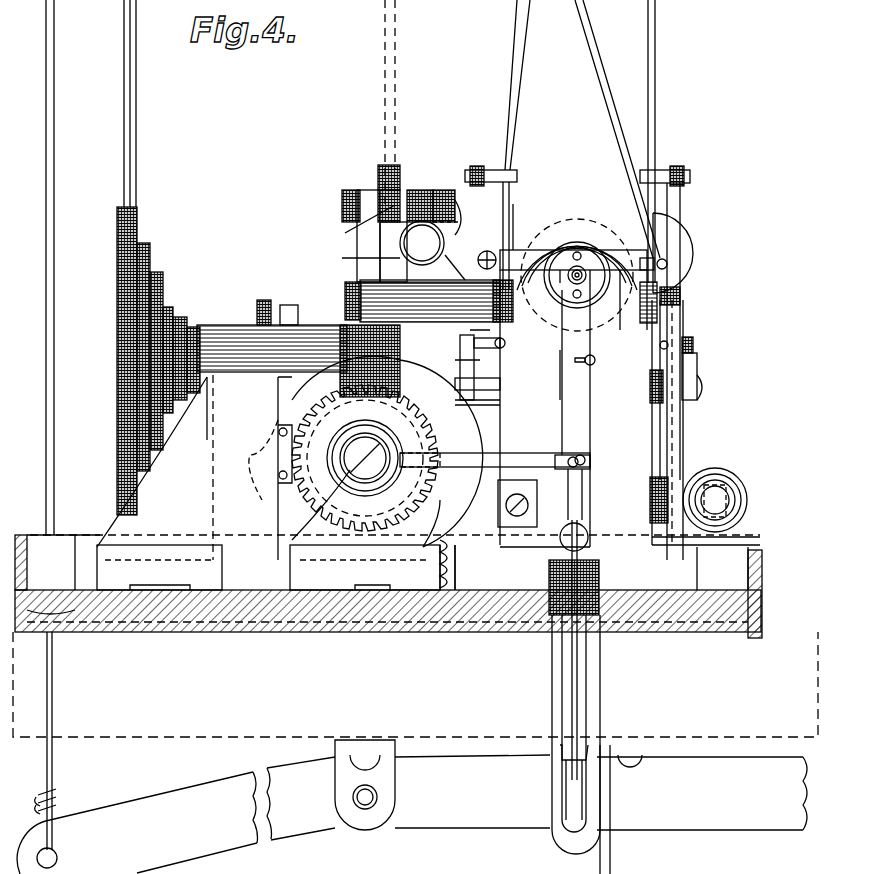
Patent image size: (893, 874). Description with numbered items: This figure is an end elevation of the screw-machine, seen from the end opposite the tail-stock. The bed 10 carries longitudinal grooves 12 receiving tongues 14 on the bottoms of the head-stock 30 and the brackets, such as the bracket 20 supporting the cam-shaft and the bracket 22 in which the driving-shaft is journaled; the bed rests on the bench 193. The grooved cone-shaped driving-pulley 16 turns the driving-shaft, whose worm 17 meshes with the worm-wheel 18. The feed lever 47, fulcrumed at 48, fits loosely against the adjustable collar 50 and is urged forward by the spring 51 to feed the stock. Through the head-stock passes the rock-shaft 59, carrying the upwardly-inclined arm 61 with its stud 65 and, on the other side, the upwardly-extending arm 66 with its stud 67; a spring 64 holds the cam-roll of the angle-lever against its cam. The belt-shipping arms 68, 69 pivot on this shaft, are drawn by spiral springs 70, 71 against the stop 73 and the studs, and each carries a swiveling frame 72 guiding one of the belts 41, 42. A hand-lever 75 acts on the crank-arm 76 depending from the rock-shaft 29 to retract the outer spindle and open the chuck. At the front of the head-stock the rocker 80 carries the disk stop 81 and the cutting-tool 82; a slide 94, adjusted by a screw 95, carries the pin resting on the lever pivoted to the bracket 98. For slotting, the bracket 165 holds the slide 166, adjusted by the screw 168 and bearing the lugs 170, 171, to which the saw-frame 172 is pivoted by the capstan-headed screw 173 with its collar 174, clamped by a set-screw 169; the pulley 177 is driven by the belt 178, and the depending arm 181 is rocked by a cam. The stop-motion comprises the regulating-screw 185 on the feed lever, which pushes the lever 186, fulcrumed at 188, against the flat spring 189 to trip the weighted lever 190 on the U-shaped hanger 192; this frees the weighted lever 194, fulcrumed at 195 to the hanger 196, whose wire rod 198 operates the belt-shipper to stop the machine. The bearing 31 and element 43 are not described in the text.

The bed 10 is at (388, 586).
The longitudinal parallel grooves 12 is at (135, 588).
The tongues 14 is at (268, 567).
The grooved cone-shaped driving-pulley 16 is at (166, 280).
The worm 17 is at (298, 306).
The worm-wheel 18 is at (365, 458).
The bracket 20 is at (387, 451).
The bracket 22 is at (252, 467).
The rock-shaft 29 is at (440, 320).
The head-stock 30 is at (565, 408).
The bearing 31 is at (512, 308).
The belt 41 is at (656, 82).
The belt 42 is at (518, 90).
The pulley 43 is at (577, 207).
The lever 47 is at (560, 402).
The fulcrum 48 is at (540, 448).
The collar 50 is at (596, 305).
The spring 51 is at (594, 364).
The rock-shaft 59 is at (698, 388).
The upwardly-inclined arm 61 is at (460, 345).
The spring 64 is at (445, 540).
The stud 65 is at (502, 343).
The upwardly-extending arm 66 is at (696, 362).
The stud 67 is at (694, 340).
The belt-shipping arm 68 is at (513, 204).
The belt-shipping arm 69 is at (683, 210).
The spiral spring 70 is at (487, 248).
The spiral spring 71 is at (665, 263).
The swiveling frame 72 is at (478, 172).
The stop 73 is at (500, 383).
The hand-lever 75 is at (683, 444).
The crank-arm 76 is at (680, 320).
The rocker 80 is at (345, 324).
The disk stop 81 is at (689, 258).
The cutting-tool 82 is at (498, 250).
The slide 94 is at (300, 307).
The screw 95 is at (259, 302).
The bracket 98 is at (152, 462).
The bracket 165 is at (461, 270).
The slide 166 is at (357, 256).
The screw 168 is at (422, 243).
The set-screw 169 is at (442, 190).
The lug 170 is at (456, 217).
The lug 171 is at (396, 250).
The saw-frame 172 is at (362, 190).
The capstan-headed screw 173 is at (342, 210).
The collar 174 is at (350, 223).
The pulley 177 is at (382, 165).
The belt 178 is at (396, 90).
The arm 181 is at (313, 282).
The regulating-screw 185 is at (590, 462).
The lever 186 is at (578, 505).
The fulcrum 188 is at (588, 539).
The flat spring 189 is at (583, 486).
The weighted lever 190 is at (598, 797).
The U-shaped hanger 192 is at (613, 845).
The bench 193 is at (415, 684).
The weighted lever 194 is at (412, 814).
The fulcrum 195 is at (378, 798).
The hanger 196 is at (365, 785).
The wire rod 198 is at (56, 702).